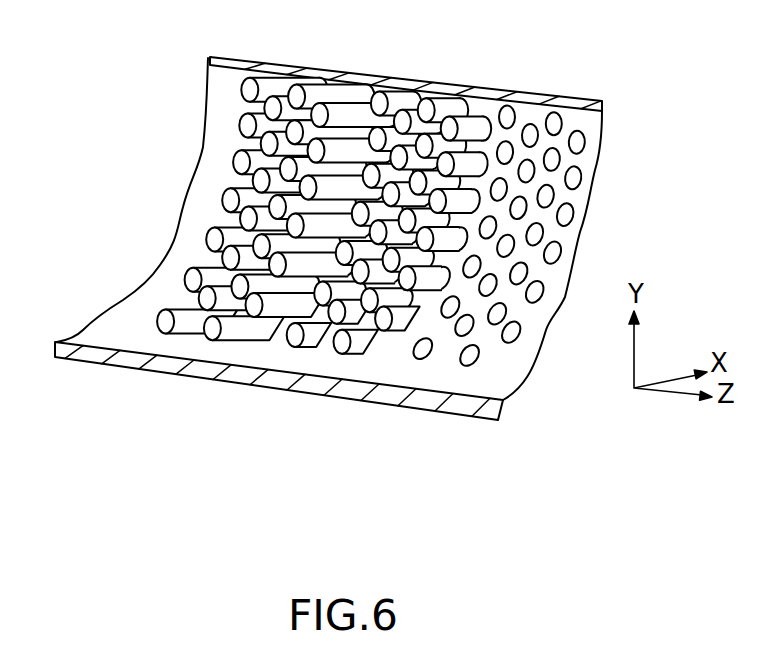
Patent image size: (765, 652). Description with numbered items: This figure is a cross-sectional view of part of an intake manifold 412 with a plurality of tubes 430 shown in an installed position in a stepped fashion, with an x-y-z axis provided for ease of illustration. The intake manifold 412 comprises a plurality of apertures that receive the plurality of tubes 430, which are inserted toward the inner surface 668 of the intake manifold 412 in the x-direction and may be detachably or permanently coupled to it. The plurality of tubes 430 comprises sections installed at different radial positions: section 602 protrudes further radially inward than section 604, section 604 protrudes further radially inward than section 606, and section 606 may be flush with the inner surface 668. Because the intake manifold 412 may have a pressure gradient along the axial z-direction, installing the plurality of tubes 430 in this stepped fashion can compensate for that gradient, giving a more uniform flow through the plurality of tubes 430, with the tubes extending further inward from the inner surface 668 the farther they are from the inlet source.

The intake manifold 412 is at (123, 313).
The inner surface 668 is at (180, 242).
The plurality of tubes 430 is at (338, 190).
The section 602 is at (277, 175).
The section 604 is at (389, 190).
The section 606 is at (500, 204).